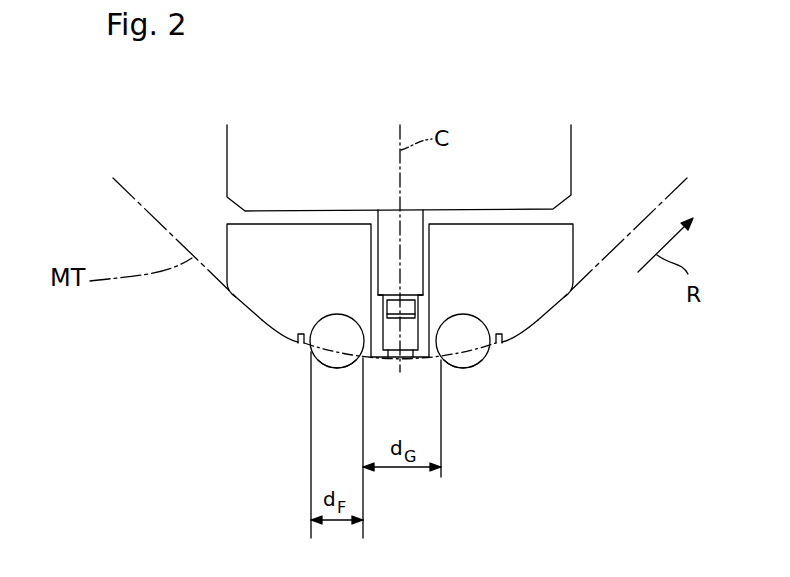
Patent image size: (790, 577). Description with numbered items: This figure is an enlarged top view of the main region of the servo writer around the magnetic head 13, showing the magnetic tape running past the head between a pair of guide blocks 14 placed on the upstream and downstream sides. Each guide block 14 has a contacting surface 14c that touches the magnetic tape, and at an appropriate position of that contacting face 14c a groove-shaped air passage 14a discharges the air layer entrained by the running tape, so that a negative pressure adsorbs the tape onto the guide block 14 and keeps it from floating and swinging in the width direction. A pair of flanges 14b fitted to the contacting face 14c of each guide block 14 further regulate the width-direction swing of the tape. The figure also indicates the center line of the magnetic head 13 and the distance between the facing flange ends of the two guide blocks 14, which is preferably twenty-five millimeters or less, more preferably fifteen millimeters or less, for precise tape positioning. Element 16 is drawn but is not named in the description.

The magnetic head 13 is at (404, 357).
The guide block 14 is at (229, 225).
The air passage 14a is at (297, 345).
The flange 14b is at (330, 370).
The contacting surface 14c is at (272, 320).
The ball 16 is at (368, 364).